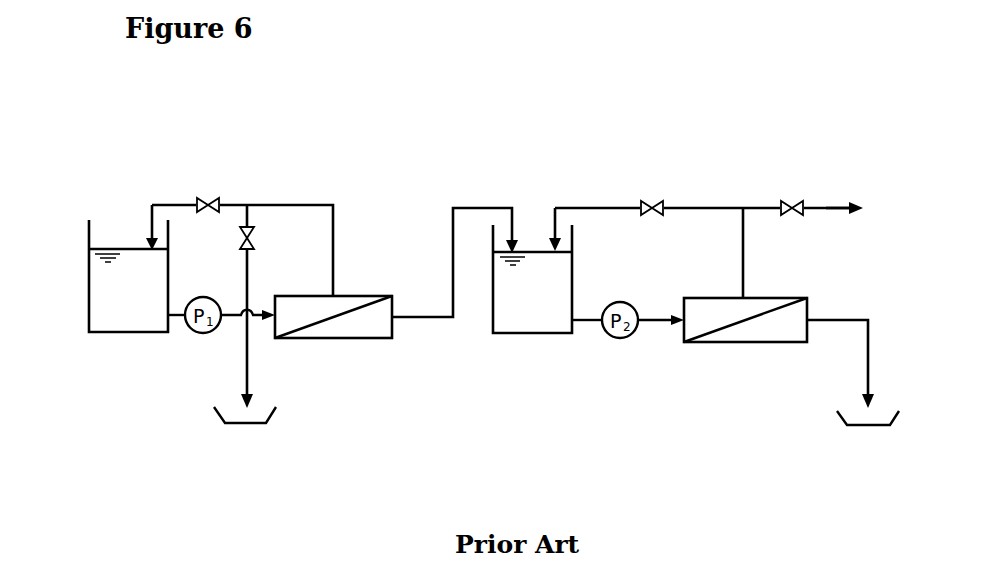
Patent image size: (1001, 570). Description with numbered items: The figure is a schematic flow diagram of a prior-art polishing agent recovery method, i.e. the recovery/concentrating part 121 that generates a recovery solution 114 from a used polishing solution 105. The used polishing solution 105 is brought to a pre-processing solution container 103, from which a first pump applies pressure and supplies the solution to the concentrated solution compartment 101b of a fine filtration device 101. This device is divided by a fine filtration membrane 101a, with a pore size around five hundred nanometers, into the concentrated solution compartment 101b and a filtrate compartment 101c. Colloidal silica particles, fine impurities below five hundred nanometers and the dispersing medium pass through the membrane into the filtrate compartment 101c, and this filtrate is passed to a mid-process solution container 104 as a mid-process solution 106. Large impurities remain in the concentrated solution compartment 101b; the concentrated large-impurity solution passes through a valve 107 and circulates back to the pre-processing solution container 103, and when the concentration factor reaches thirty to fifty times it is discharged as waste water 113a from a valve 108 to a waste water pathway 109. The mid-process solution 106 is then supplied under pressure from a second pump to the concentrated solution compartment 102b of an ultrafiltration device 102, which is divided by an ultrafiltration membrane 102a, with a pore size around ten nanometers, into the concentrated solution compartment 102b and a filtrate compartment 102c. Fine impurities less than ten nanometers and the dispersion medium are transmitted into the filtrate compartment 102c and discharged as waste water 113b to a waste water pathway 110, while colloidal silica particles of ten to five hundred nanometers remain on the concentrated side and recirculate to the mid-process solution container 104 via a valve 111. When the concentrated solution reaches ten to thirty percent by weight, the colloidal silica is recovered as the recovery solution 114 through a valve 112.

The recovery/concentrating part 121 is at (423, 110).
The pre-processing solution container 103 is at (113, 333).
The mid-process solution container 104 is at (540, 334).
The used polishing solution 105 is at (123, 259).
The mid-process solution 106 is at (531, 262).
The valve 107 is at (209, 199).
The valve 108 is at (252, 236).
The valve 111 is at (652, 201).
The valve 112 is at (791, 202).
The recovery solution 114 is at (829, 207).
The fine filtration device 101 is at (318, 340).
The fine filtration membrane 101a is at (351, 303).
The concentrated solution compartment 101b is at (293, 308).
The filtrate compartment 101c is at (372, 340).
The ultrafiltration device 102 is at (727, 343).
The ultrafiltration membrane 102a is at (798, 272).
The concentrated solution compartment 102b is at (704, 299).
The filtrate compartment 102c is at (780, 343).
The waste water pathway 109 is at (244, 426).
The waste water pathway 110 is at (867, 427).
The waste water 113a is at (247, 360).
The waste water 113b is at (824, 320).